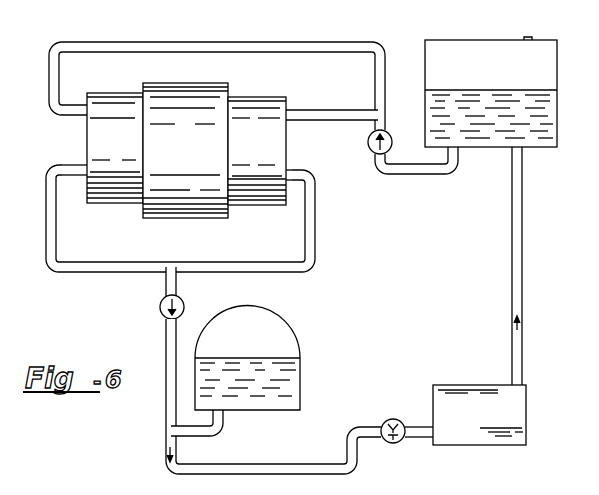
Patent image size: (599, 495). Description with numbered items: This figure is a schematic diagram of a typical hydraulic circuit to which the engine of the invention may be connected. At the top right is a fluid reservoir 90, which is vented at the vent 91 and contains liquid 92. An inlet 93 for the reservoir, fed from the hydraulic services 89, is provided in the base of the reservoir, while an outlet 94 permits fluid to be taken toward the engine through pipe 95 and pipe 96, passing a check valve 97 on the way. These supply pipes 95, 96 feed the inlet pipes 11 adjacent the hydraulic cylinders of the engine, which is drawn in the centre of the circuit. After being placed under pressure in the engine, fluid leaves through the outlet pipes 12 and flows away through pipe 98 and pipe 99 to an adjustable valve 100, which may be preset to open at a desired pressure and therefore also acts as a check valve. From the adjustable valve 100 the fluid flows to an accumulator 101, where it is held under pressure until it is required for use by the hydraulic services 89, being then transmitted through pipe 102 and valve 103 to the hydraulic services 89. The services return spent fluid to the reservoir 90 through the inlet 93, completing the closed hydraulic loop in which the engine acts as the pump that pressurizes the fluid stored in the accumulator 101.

The pipe 11 is at (81, 106).
The outlet pipe 12 is at (75, 169).
The hydraulic services 89 is at (527, 398).
The fluid reservoir 90 is at (560, 74).
The vent 91 is at (530, 38).
The liquid 92 is at (553, 119).
The inlet 93 is at (525, 150).
The outlet 94 is at (458, 148).
The pipe 95 is at (331, 115).
The pipe 96 is at (322, 35).
The check valve 97 is at (371, 152).
The pipe 98 is at (56, 227).
The pipe 99 is at (316, 222).
The adjustable valve 100 is at (159, 307).
The accumulator 101 is at (301, 343).
The pipe 102 is at (177, 448).
The valve 103 is at (396, 418).